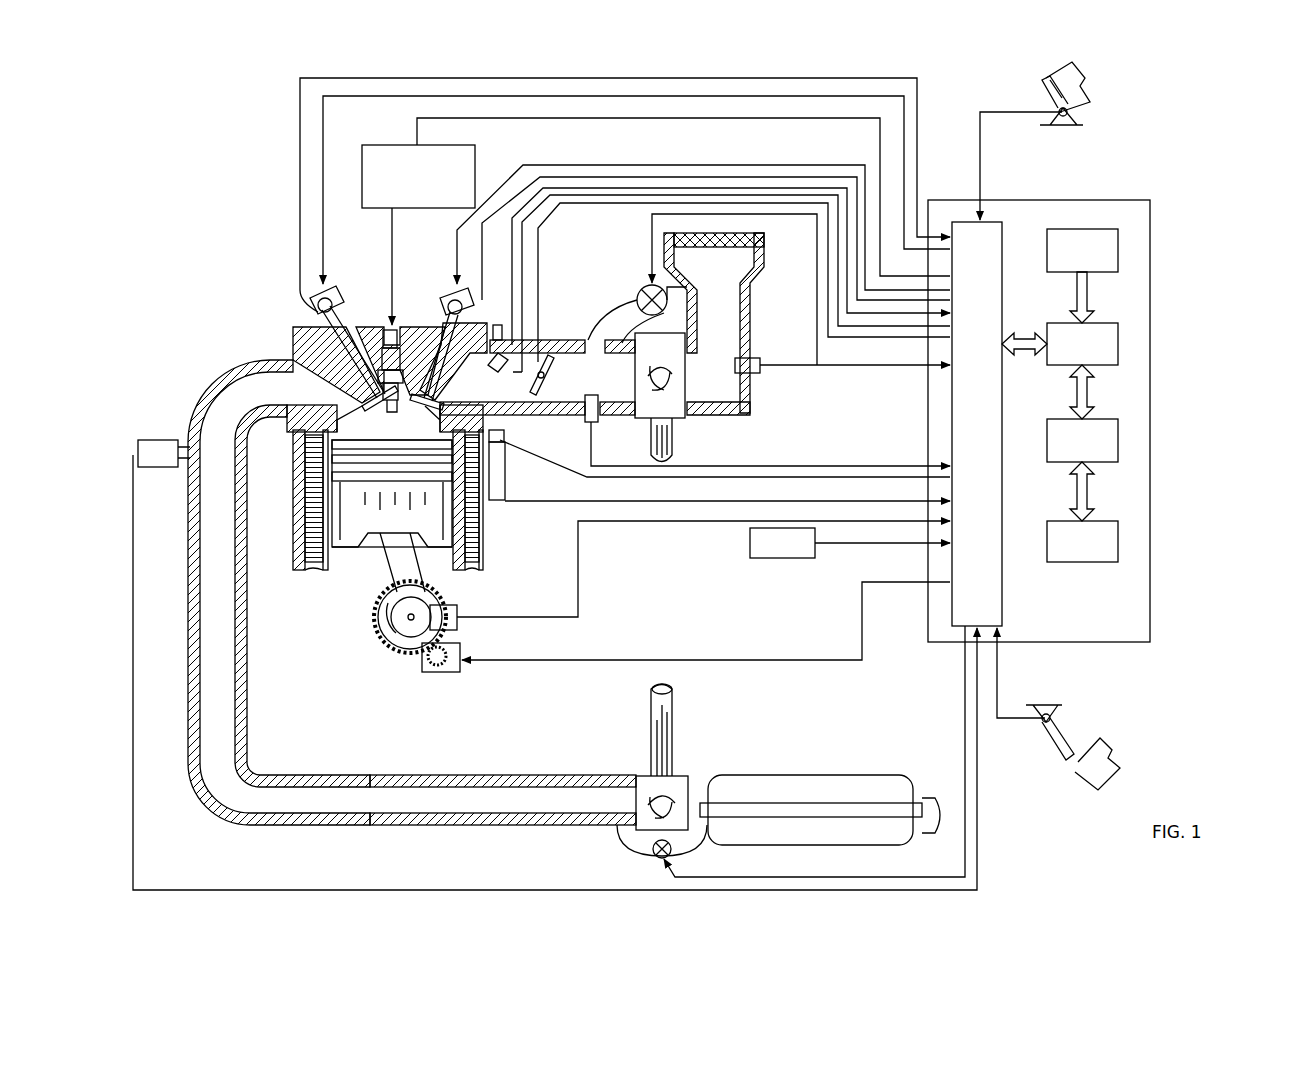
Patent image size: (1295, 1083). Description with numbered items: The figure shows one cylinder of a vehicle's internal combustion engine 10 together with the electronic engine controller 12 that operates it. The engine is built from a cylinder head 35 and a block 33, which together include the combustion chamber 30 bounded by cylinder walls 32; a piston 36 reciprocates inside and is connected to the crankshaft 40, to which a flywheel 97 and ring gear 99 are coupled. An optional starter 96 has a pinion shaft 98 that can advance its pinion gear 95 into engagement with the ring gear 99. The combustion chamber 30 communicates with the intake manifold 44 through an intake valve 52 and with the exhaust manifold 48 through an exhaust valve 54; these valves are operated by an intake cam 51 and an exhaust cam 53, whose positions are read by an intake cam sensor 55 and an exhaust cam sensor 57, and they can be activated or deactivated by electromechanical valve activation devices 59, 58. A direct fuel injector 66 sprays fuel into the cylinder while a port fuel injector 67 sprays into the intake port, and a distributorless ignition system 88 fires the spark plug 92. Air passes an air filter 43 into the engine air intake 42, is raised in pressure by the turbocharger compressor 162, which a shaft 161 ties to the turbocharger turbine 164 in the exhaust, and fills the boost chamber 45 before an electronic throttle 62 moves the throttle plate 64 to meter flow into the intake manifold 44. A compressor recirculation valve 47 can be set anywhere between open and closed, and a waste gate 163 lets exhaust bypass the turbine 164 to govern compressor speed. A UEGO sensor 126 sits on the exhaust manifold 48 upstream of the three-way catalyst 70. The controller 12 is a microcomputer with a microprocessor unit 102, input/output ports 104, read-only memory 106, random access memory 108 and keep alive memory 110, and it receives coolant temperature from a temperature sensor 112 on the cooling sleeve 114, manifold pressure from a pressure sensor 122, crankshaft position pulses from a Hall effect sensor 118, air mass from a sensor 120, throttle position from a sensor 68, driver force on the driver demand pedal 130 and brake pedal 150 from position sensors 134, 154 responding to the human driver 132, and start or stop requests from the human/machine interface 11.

The internal combustion engine 10 is at (232, 276).
The human/machine interface 11 is at (850, 543).
The electronic engine controller 12 is at (1148, 200).
The combustion chamber 30 is at (305, 525).
The cylinder walls 32 is at (338, 560).
The block 33 is at (295, 468).
The cylinder head 35 is at (290, 327).
The piston 36 is at (378, 530).
The crankshaft 40 is at (392, 647).
The engine air intake 42 is at (600, 252).
The air filter 43 is at (735, 246).
The intake manifold 44 is at (515, 390).
The boost chamber 45 is at (613, 390).
The compressor recirculation valve 47 is at (645, 286).
The exhaust manifold 48 is at (272, 396).
The intake cam 51 is at (455, 292).
The intake valve 52 is at (438, 370).
The exhaust cam 53 is at (325, 290).
The exhaust valve 54 is at (340, 395).
The intake cam sensor 55 is at (470, 312).
The exhaust cam sensor 57 is at (316, 308).
The valve activation device 58 is at (333, 312).
The valve activation device 59 is at (448, 313).
The electronic throttle 62 is at (548, 378).
The throttle plate 64 is at (548, 385).
The direct fuel injector 66 is at (504, 442).
The port fuel injector 67 is at (497, 339).
The throttle position sensor 68 is at (540, 345).
The three-way catalyst 70 is at (752, 775).
The distributorless ignition system 88 is at (475, 160).
The spark plug 92 is at (400, 325).
The pinion gear 95 is at (445, 672).
The starter 96 is at (455, 672).
The flywheel 97 is at (378, 630).
The pinion shaft 98 is at (432, 668).
The ring gear 99 is at (405, 655).
The microprocessor unit 102 is at (1118, 340).
The input/output ports 104 is at (1003, 230).
The read-only memory 106 is at (1118, 244).
The random access memory 108 is at (1118, 436).
The keep alive memory 110 is at (1118, 538).
The temperature sensor 112 is at (514, 471).
The cooling sleeve 114 is at (475, 520).
The Hall effect sensor 118 is at (452, 608).
The air mass sensor 120 is at (755, 358).
The pressure sensor 122 is at (585, 415).
The Universal Exhaust Gas Oxygen sensor 126 is at (138, 445).
The driver demand pedal 130 is at (1052, 92).
The human driver 132 is at (1090, 85).
The position sensor 134 is at (1085, 113).
The brake pedal 150 is at (1066, 762).
The position sensor 154 is at (1042, 712).
The shaft 161 is at (648, 440).
The turbocharger compressor 162 is at (670, 405).
The waste gate 163 is at (652, 858).
The turbocharger turbine 164 is at (640, 776).